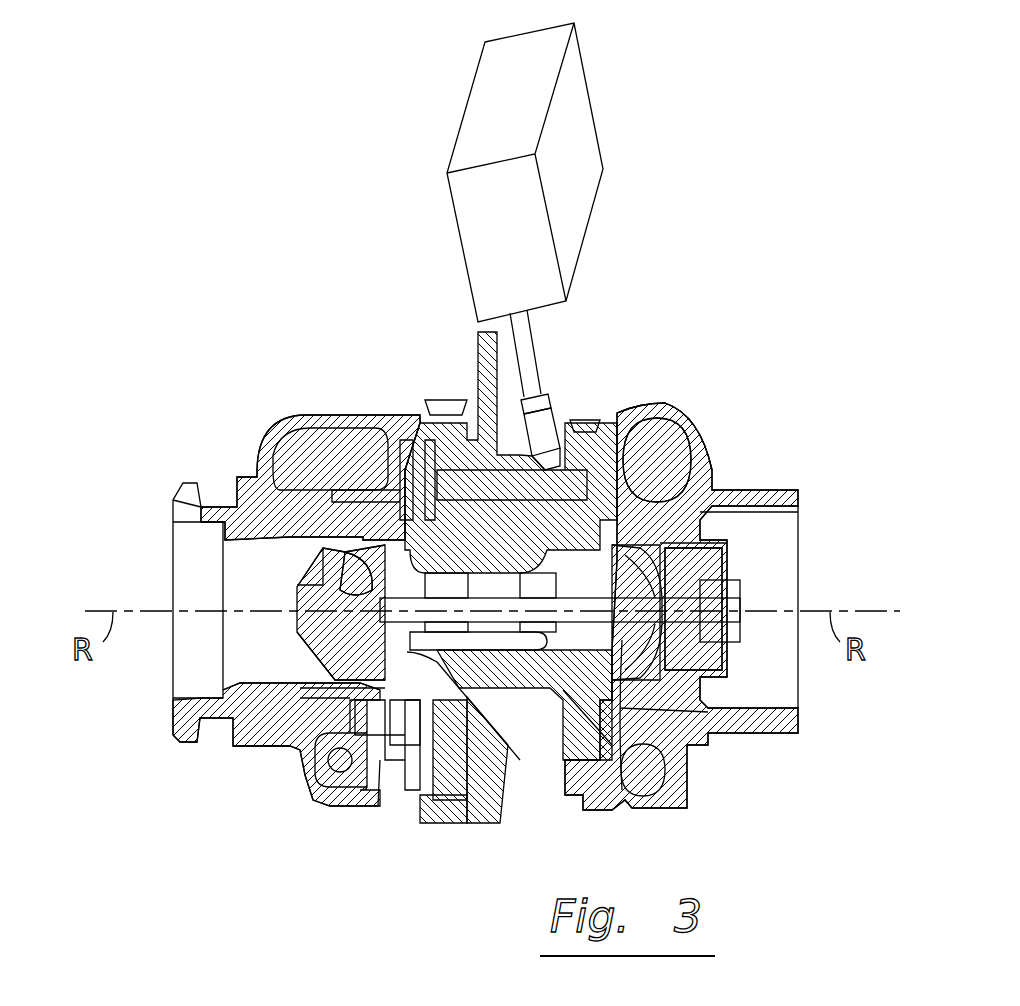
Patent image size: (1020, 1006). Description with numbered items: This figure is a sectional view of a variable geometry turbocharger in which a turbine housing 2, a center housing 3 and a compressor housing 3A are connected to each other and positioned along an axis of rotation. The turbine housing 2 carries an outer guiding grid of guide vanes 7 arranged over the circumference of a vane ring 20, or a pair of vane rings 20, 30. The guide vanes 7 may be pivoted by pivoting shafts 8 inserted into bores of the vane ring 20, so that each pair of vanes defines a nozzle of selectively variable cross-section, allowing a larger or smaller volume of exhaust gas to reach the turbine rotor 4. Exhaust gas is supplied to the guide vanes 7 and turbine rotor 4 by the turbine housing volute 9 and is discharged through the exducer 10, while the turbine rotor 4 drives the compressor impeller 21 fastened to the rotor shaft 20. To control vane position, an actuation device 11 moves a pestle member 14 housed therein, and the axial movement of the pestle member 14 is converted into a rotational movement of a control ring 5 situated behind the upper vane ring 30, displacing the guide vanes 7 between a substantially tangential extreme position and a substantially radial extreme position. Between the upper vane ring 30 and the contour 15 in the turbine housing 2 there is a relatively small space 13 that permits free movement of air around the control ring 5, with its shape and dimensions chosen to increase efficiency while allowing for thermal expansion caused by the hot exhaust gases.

The turbine housing 2 is at (250, 475).
The center housing 3 is at (575, 760).
The compressor housing 3A is at (680, 413).
The turbine rotor 4 is at (293, 588).
The control ring 5 is at (418, 453).
The guide vanes 7 is at (362, 737).
The pivoting shafts 8 is at (395, 735).
The turbine housing volute 9 is at (667, 463).
The exducer 10 is at (240, 683).
The actuation device 11 is at (582, 198).
The space 13 is at (292, 752).
The pestle member 14 is at (532, 368).
The contour 15 is at (470, 735).
The vane ring 20 is at (340, 772).
The compressor impeller 21 is at (648, 580).
The upper vane ring 30 is at (400, 745).